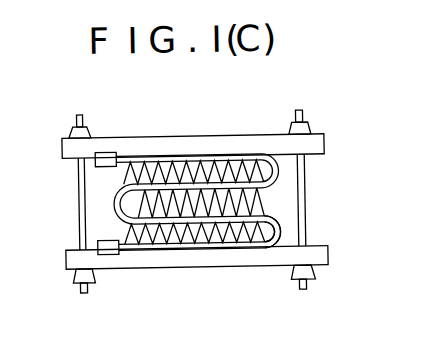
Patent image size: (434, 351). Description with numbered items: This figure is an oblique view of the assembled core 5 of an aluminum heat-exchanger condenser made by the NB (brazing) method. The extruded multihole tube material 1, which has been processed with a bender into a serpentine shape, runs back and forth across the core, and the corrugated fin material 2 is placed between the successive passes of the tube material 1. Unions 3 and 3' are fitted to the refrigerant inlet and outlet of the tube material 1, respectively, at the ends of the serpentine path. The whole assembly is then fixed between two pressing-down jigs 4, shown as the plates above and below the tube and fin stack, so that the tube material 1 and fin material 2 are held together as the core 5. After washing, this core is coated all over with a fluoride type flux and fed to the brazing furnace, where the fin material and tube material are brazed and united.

The tube material 1 is at (168, 247).
The fin material 2 is at (182, 160).
The union 3 is at (70, 175).
The union 3' is at (71, 235).
The pressing-down jig 4 is at (259, 146).
The core 5 is at (279, 207).